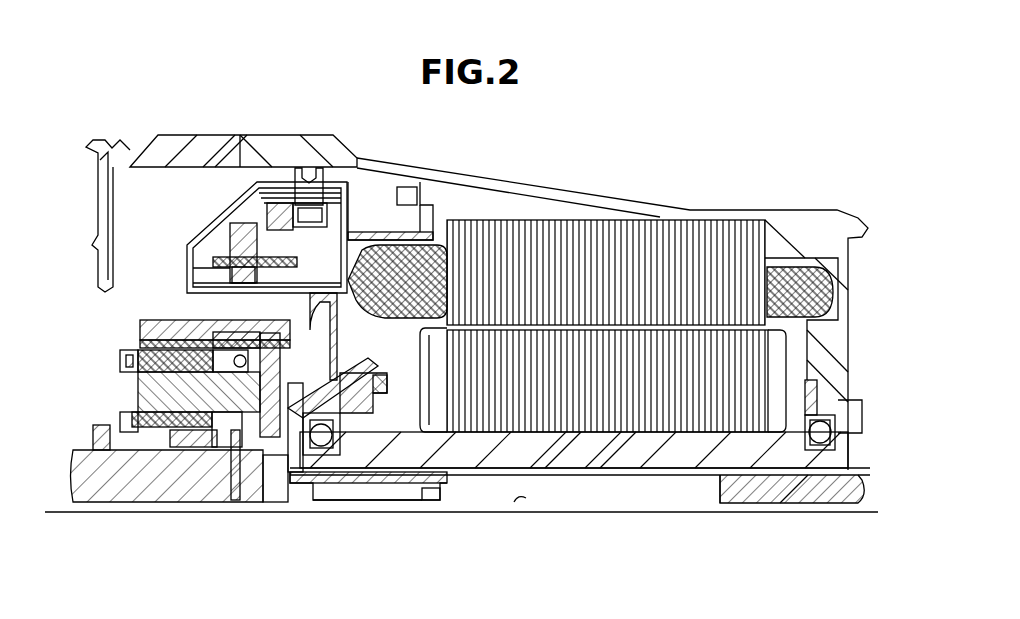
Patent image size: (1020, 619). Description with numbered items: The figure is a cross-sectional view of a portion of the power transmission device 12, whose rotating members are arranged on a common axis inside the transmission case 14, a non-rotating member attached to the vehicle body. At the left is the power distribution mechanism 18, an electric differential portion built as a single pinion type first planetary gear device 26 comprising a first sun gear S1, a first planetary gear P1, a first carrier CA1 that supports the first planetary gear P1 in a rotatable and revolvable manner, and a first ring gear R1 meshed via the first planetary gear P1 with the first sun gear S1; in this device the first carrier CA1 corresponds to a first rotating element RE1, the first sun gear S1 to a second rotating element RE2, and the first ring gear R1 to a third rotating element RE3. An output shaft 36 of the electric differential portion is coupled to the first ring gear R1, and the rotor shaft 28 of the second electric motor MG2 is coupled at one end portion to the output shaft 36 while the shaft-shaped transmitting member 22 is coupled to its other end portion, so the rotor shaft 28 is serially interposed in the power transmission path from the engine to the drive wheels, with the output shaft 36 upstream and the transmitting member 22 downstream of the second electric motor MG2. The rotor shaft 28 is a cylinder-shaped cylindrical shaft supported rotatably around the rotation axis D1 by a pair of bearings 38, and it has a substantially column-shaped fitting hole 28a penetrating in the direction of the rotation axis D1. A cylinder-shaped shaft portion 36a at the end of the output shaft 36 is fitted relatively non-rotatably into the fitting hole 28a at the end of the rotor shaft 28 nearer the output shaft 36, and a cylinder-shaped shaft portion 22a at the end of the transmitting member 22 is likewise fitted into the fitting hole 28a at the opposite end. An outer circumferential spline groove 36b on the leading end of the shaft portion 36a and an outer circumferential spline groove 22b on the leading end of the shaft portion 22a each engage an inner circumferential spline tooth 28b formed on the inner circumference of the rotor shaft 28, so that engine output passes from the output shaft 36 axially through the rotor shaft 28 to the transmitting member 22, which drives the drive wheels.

The power transmission device 12 is at (563, 177).
The transmission case 14 is at (283, 150).
The second electric motor MG2 is at (680, 223).
The power distribution mechanism 18 is at (182, 411).
The first ring gear R1 is at (215, 328).
The third rotating element RE3 is at (227, 320).
The first carrier CA1 is at (128, 378).
The first planetary gear P1 is at (132, 394).
The second rotating element RE2 is at (72, 452).
The first sun gear S1 is at (166, 458).
The first planetary gear device 26 is at (195, 507).
The first rotating element RE1 is at (260, 496).
The output shaft 36 is at (295, 494).
The shaft portion 36a is at (370, 488).
The outer circumferential spline groove 36b is at (393, 462).
The bearings 38 is at (332, 413).
The rotor shaft 28 is at (617, 517).
The fitting hole 28a is at (566, 488).
The inner circumferential spline tooth 28b is at (621, 479).
The transmitting member 22 is at (858, 494).
The shaft portion 22a is at (808, 494).
The outer circumferential spline groove 22b is at (737, 465).
The rotation axis D1 is at (523, 503).